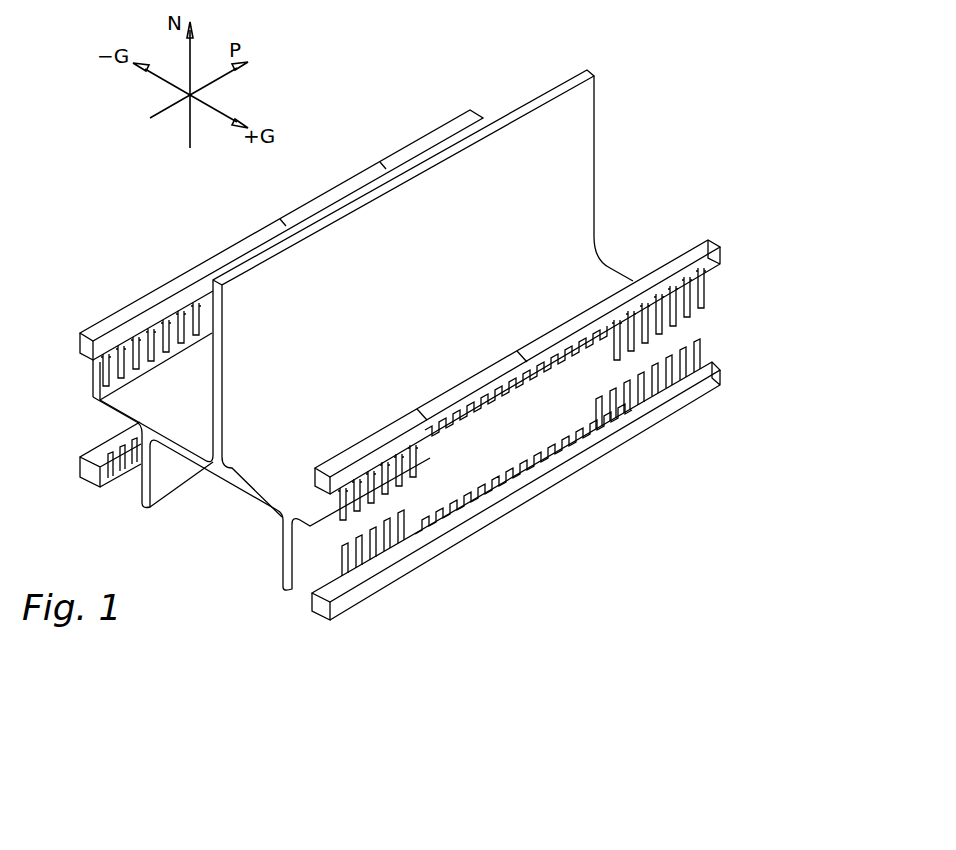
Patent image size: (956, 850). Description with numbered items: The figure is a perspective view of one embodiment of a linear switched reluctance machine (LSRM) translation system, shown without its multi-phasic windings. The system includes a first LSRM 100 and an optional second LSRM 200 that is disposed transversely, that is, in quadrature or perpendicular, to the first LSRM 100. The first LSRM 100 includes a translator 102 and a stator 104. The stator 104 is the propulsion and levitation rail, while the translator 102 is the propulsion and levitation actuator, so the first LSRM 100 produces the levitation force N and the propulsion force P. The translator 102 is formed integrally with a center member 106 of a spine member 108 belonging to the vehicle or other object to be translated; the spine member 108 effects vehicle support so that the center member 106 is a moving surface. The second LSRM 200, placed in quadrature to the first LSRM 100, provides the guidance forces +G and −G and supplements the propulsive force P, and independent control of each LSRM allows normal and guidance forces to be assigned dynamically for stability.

The first LSRM 100 is at (580, 356).
The translator 102 is at (720, 278).
The stator 104 is at (712, 242).
The center member 106 is at (617, 272).
The spine member 108 is at (586, 155).
The second LSRM 200 is at (710, 358).